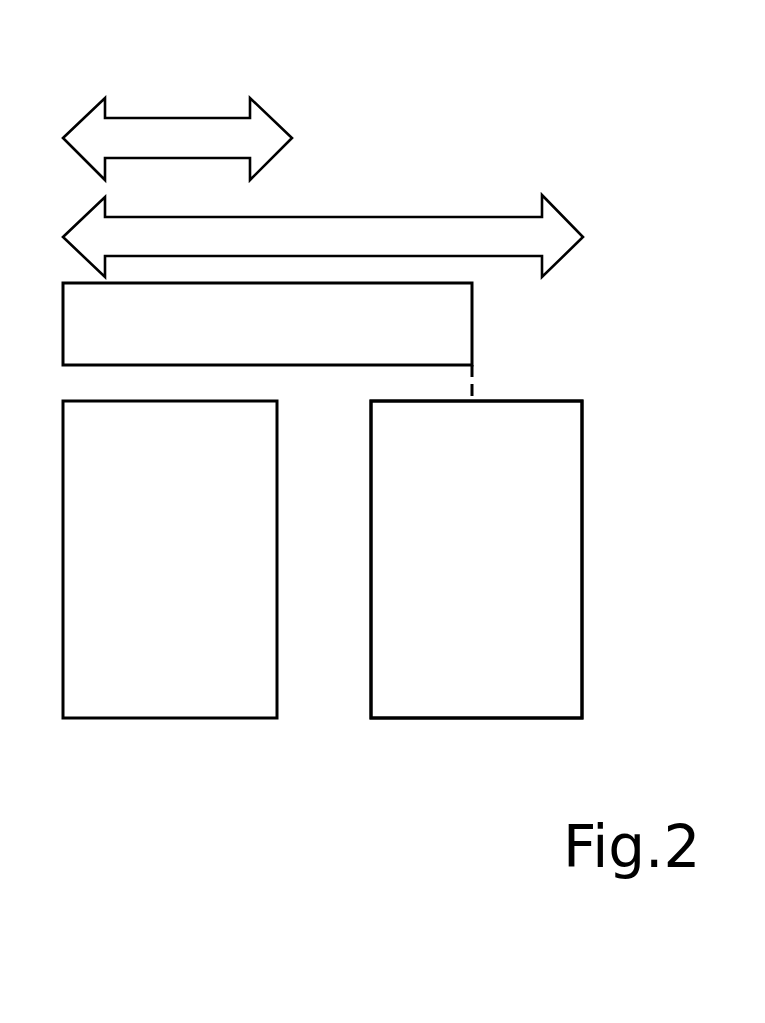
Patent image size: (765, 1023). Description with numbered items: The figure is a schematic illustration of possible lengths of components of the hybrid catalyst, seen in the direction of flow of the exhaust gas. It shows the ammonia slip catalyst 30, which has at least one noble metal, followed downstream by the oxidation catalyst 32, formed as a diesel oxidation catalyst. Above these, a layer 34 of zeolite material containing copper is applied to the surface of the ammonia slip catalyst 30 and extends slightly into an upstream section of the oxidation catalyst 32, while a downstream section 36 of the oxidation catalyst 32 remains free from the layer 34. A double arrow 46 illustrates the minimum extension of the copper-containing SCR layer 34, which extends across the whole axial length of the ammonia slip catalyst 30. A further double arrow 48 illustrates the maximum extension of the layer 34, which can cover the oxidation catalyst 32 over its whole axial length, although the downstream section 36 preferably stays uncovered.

The ammonia slip catalyst 30 is at (158, 698).
The oxidation catalyst 32 is at (427, 698).
The layer of zeolite material containing copper 34 is at (458, 327).
The downstream section of the oxidation catalyst 36 is at (572, 393).
The double arrow 46 is at (176, 138).
The further double arrow 48 is at (385, 236).